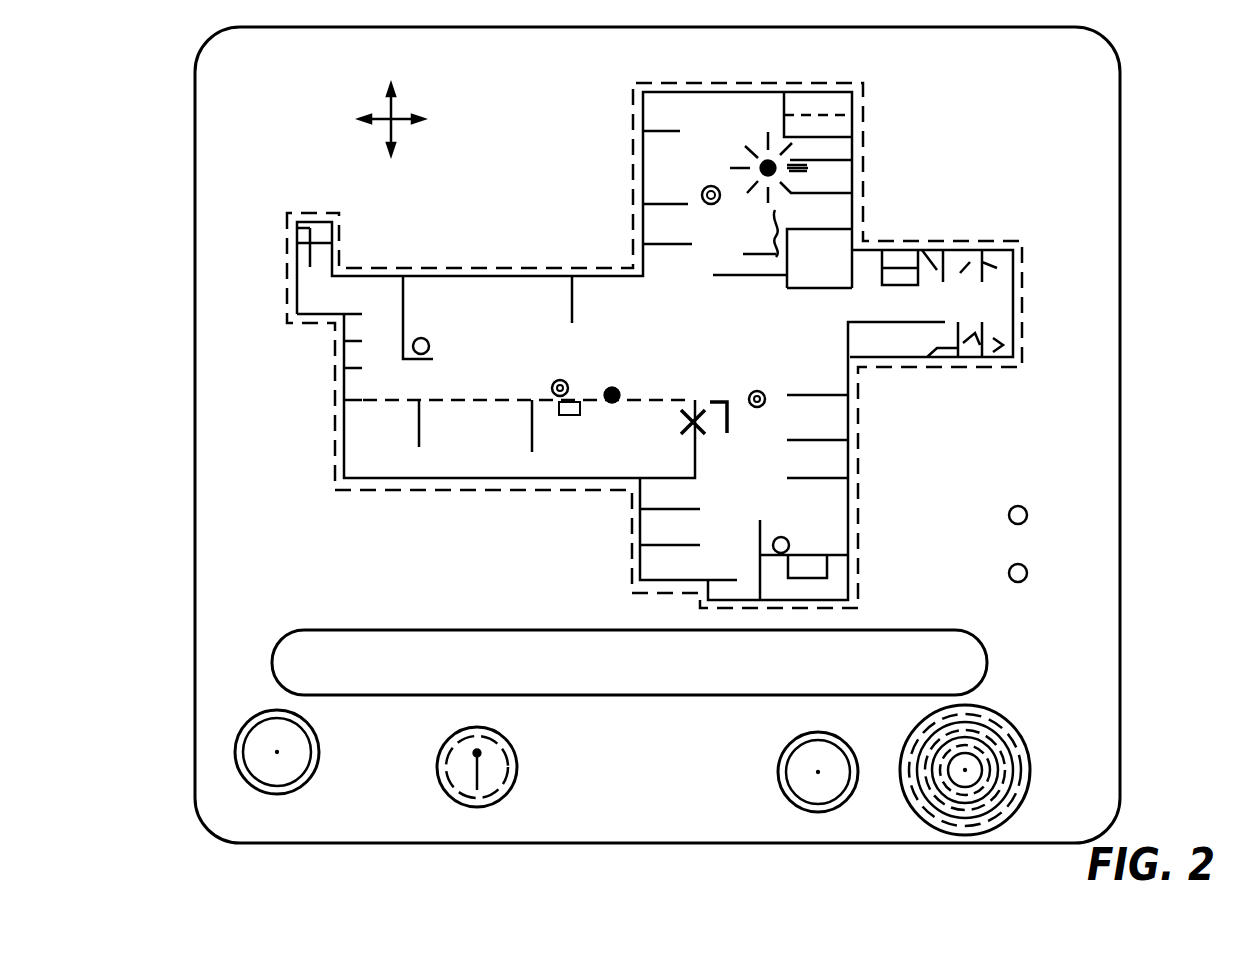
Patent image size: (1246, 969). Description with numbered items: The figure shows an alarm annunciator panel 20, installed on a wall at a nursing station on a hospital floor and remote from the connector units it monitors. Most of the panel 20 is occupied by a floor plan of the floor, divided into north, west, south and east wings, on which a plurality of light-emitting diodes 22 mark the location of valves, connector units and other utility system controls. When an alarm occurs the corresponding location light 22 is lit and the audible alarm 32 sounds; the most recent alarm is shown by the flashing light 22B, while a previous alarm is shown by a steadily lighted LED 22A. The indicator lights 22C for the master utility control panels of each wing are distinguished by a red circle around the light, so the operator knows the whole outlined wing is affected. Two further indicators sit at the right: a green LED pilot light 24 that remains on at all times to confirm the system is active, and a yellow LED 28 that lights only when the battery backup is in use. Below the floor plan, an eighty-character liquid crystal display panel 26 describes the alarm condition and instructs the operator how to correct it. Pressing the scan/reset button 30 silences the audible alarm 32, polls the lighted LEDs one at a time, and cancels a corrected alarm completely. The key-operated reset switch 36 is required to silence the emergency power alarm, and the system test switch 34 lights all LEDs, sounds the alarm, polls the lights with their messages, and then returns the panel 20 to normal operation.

The alarm annunciator panel 20 is at (226, 578).
The light-emitting diodes 22 is at (427, 340).
The steadily lighted LED 22A is at (609, 403).
The flashing light 22B is at (778, 174).
The master control indicator lights 22C is at (553, 393).
The green LED pilot light 24 is at (1023, 507).
The liquid crystal display panel 26 is at (278, 677).
The yellow LED 28 is at (1027, 573).
The scan/reset button 30 is at (833, 797).
The audible alarm 32 is at (992, 743).
The system test switch 34 is at (263, 777).
The reset switch 36 is at (497, 790).